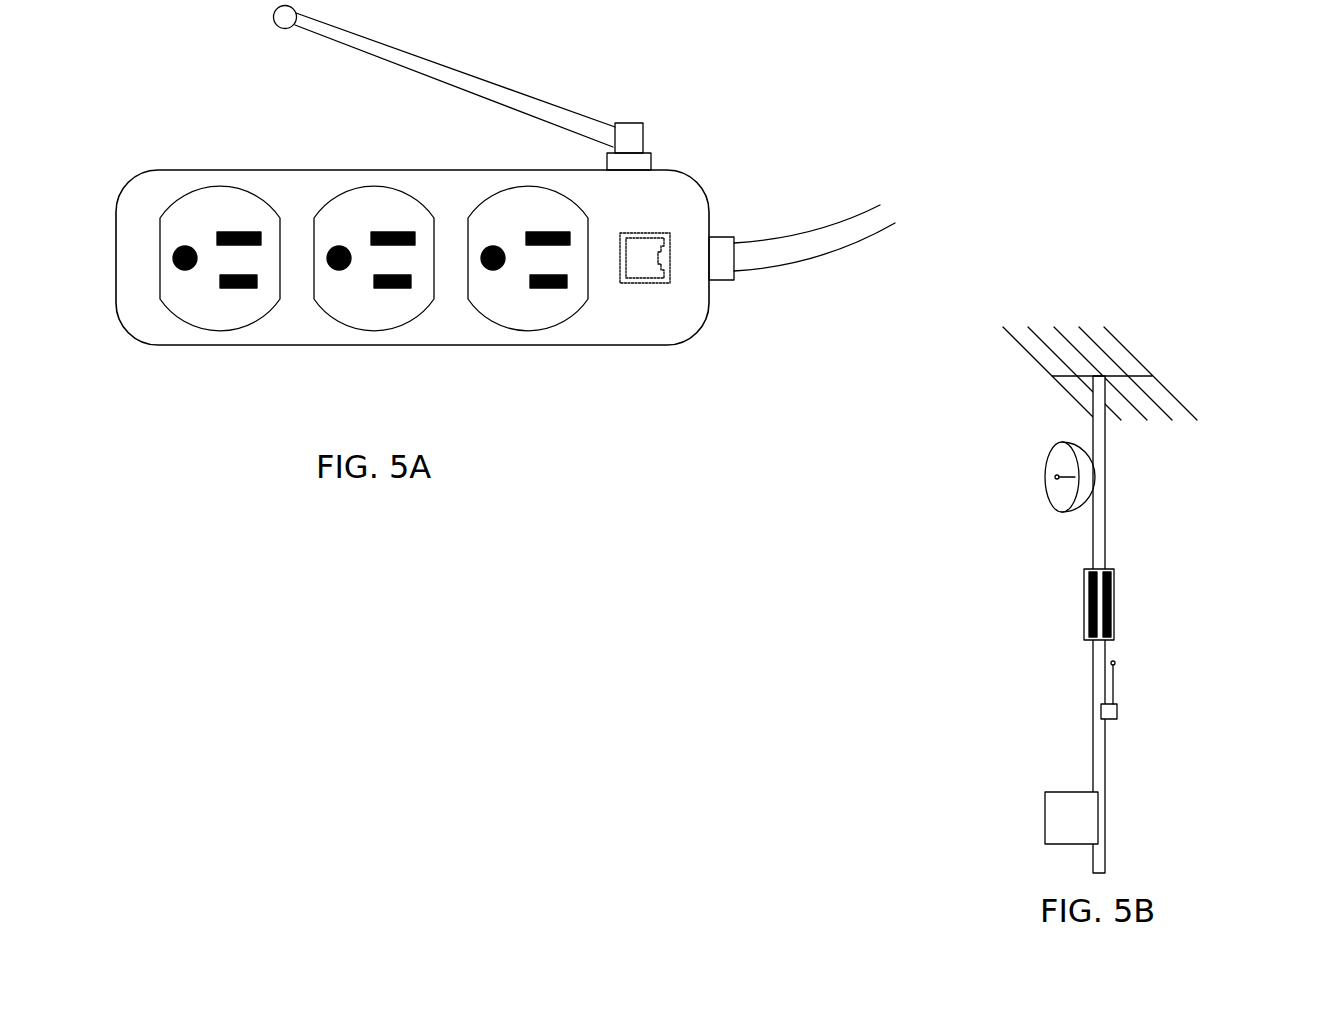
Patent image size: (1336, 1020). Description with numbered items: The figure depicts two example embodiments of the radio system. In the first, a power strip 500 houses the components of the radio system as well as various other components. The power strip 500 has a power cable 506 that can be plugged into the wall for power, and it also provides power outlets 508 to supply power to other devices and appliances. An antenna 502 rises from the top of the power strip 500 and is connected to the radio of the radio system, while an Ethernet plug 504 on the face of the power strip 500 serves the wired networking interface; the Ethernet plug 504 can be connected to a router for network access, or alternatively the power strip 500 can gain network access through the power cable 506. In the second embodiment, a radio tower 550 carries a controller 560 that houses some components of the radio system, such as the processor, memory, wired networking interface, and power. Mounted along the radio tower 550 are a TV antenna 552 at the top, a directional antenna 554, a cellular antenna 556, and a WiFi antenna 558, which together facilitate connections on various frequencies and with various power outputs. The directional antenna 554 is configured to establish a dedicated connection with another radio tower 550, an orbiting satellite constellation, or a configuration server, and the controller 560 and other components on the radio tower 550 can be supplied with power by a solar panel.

In FIG. 5A, the power strip 500 is at (672, 345).
In FIG. 5A, the antenna 502 is at (543, 102).
In FIG. 5A, the Ethernet plug 504 is at (623, 233).
In FIG. 5A, the power cable 506 is at (788, 267).
In FIG. 5A, the electrical outlets 508 is at (472, 300).
In FIG. 5B, the radio tower 550 is at (1232, 795).
In FIG. 5B, the TV antenna 552 is at (1197, 420).
In FIG. 5B, the directional antenna 554 is at (1105, 483).
In FIG. 5B, the cellular antenna 556 is at (1114, 610).
In FIG. 5B, the WiFi antenna 558 is at (1117, 714).
In FIG. 5B, the controller 560 is at (1045, 815).